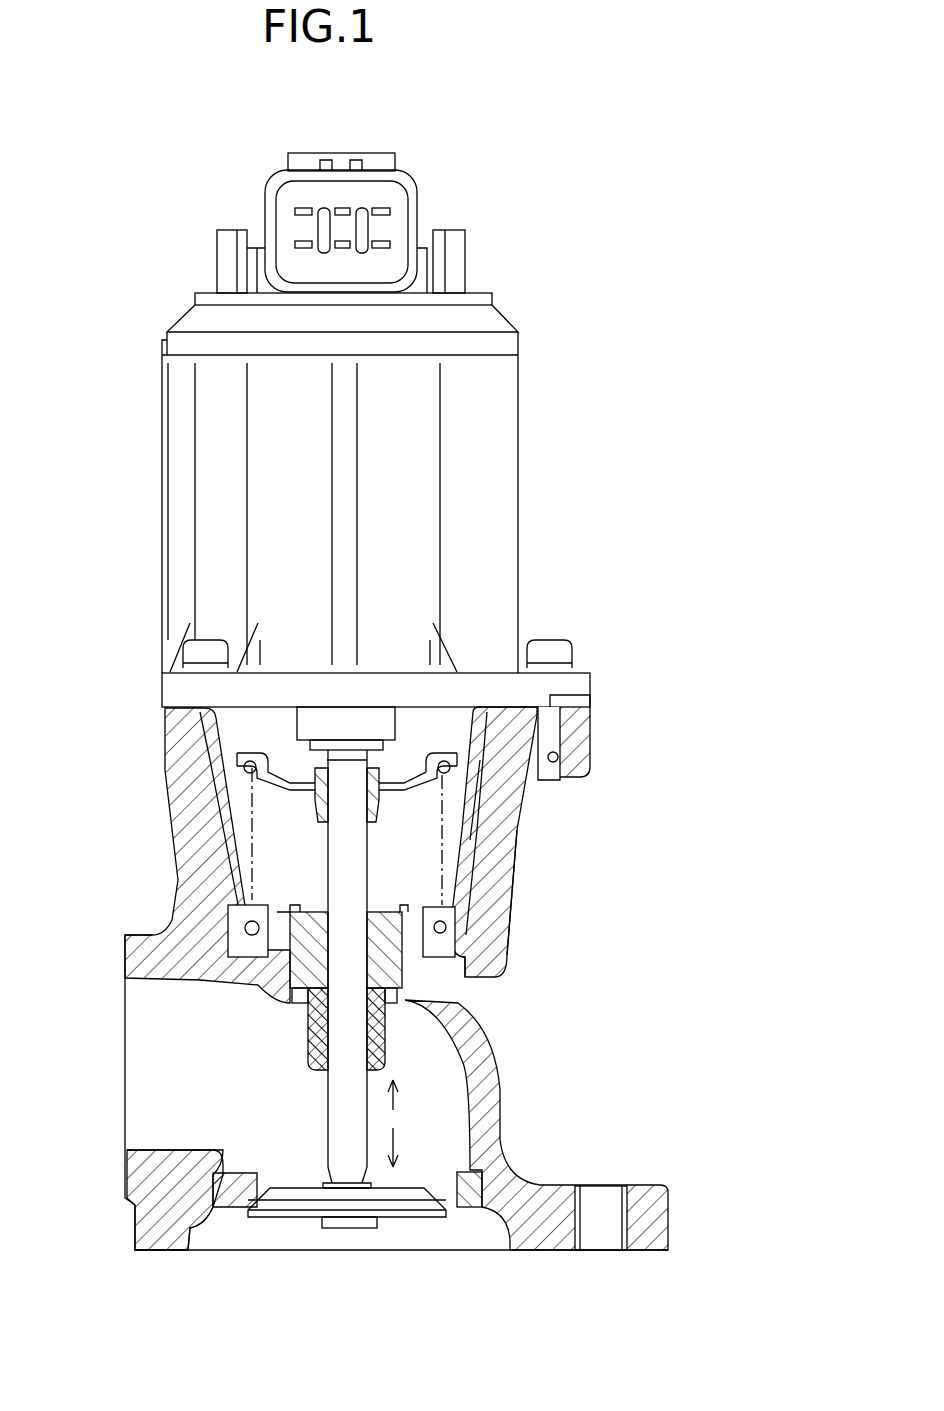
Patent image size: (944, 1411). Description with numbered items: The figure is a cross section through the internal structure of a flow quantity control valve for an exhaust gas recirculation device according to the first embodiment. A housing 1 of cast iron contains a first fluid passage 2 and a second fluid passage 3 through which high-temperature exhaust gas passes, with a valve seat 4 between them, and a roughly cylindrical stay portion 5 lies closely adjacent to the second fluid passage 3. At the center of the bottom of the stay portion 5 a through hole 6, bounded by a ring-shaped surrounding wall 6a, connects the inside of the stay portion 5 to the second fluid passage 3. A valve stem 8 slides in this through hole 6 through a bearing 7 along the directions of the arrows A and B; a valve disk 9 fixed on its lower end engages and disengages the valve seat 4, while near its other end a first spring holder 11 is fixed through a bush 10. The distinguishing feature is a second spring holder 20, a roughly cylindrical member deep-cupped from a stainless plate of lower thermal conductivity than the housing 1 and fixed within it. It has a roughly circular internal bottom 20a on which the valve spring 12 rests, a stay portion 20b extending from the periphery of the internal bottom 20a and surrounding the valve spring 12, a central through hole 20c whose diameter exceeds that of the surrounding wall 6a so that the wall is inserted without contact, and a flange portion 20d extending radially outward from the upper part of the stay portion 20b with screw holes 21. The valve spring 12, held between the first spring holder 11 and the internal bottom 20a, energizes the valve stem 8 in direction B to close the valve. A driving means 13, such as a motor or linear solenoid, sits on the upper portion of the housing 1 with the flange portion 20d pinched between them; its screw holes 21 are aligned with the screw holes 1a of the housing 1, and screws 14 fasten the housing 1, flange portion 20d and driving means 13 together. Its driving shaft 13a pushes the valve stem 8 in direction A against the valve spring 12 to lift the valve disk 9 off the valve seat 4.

The housing 1 is at (487, 1093).
The screw holes of the housing 1a is at (558, 757).
The first fluid passage 2 is at (447, 1235).
The second fluid passage 3 is at (148, 1078).
The valve seat 4 is at (482, 1186).
The stay portion 5 is at (497, 930).
The through hole 6 is at (458, 988).
The surrounding wall 6a is at (238, 910).
The bearing 7 is at (300, 995).
The valve stem 8 is at (342, 1122).
The valve disk 9 is at (280, 1193).
The bush 10 is at (310, 790).
The first spring holder 11 is at (237, 762).
The valve spring 12 is at (252, 817).
The driving means 13 is at (503, 500).
The driving shaft 13a is at (310, 752).
The screws 14 is at (185, 658).
The second spring holder 20 is at (487, 858).
The internal bottom 20a is at (465, 957).
The stay portion of the second spring holder 20b is at (510, 838).
The through hole of the second spring holder 20c is at (150, 947).
The flange portion 20d is at (530, 730).
The screw holes 21 is at (552, 697).
The valve opening direction A is at (402, 1140).
The valve closing direction B is at (402, 1103).